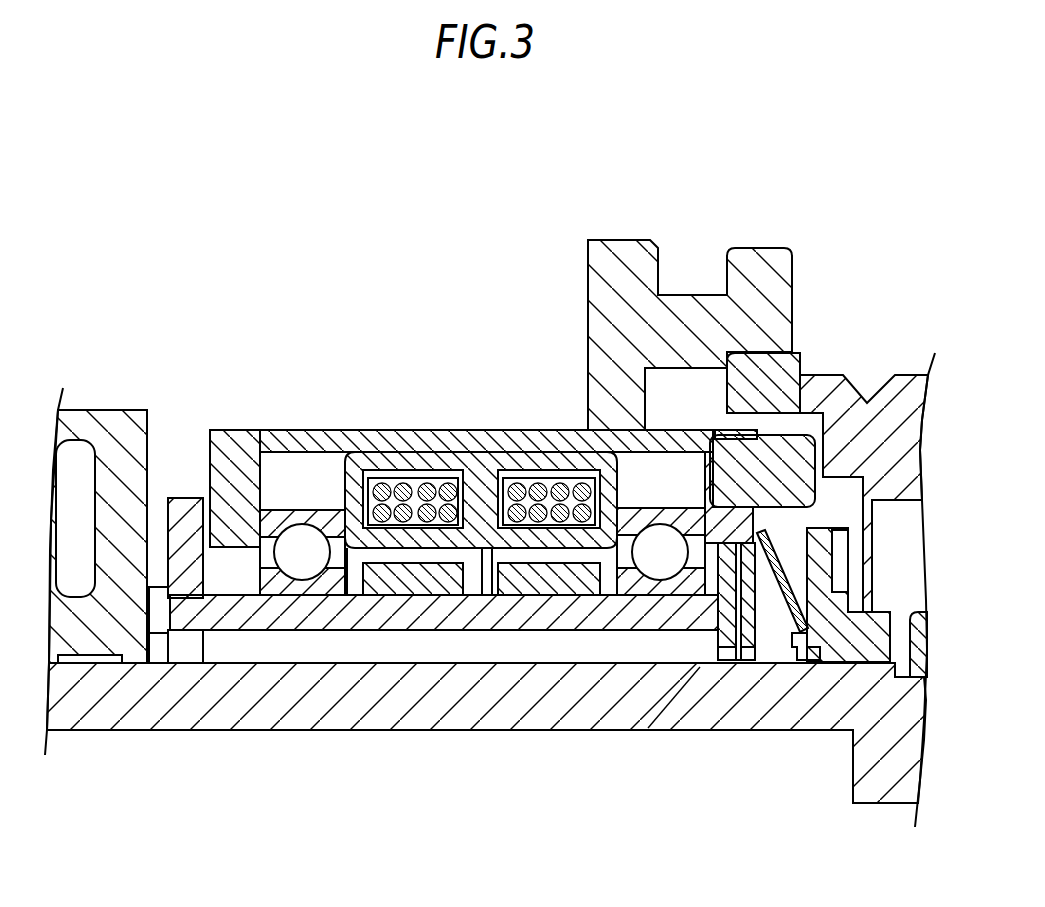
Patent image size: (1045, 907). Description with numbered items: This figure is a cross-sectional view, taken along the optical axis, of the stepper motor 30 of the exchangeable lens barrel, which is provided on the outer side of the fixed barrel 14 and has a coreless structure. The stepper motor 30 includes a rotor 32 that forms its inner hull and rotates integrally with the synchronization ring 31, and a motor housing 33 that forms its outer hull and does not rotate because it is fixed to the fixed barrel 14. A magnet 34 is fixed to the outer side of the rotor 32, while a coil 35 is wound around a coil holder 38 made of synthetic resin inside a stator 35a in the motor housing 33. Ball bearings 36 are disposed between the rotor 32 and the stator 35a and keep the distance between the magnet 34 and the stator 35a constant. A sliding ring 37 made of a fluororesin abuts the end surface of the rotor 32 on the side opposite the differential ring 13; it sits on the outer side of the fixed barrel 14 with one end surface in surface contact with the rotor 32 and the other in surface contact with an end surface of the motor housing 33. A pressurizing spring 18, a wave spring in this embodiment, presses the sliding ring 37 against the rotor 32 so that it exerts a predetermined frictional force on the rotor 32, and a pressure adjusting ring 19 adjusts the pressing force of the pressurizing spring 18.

The differential ring 13 is at (98, 427).
The fixed barrel 14 is at (157, 695).
The pressurizing spring 18 is at (780, 547).
The pressure adjusting ring 19 is at (847, 632).
The stepper motor 30 is at (457, 243).
The synchronization ring 31 is at (184, 520).
The rotor 32 is at (543, 615).
The motor housing 33 is at (277, 430).
The magnet 34 is at (413, 582).
The coil 35 is at (408, 490).
The stator 35a is at (543, 453).
The ball bearings 36 is at (300, 565).
The sliding ring 37 is at (648, 728).
The coil holder 38 is at (362, 455).